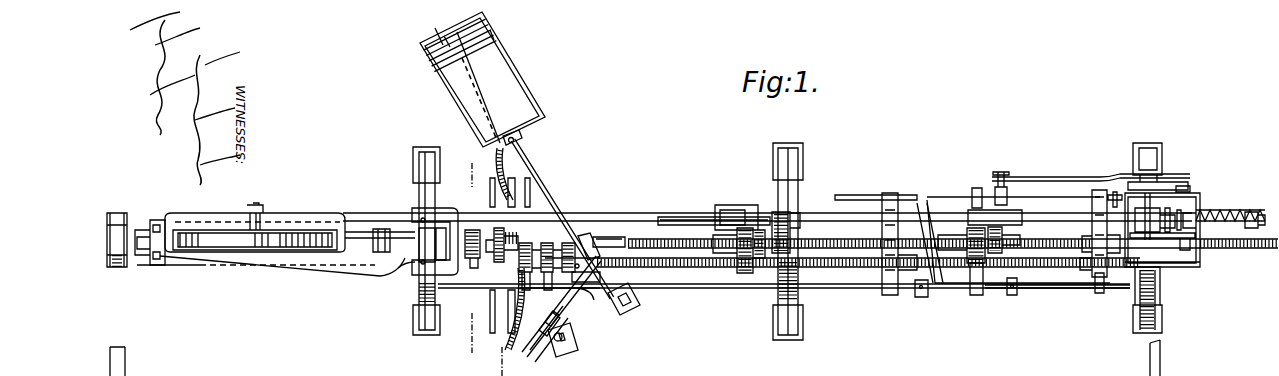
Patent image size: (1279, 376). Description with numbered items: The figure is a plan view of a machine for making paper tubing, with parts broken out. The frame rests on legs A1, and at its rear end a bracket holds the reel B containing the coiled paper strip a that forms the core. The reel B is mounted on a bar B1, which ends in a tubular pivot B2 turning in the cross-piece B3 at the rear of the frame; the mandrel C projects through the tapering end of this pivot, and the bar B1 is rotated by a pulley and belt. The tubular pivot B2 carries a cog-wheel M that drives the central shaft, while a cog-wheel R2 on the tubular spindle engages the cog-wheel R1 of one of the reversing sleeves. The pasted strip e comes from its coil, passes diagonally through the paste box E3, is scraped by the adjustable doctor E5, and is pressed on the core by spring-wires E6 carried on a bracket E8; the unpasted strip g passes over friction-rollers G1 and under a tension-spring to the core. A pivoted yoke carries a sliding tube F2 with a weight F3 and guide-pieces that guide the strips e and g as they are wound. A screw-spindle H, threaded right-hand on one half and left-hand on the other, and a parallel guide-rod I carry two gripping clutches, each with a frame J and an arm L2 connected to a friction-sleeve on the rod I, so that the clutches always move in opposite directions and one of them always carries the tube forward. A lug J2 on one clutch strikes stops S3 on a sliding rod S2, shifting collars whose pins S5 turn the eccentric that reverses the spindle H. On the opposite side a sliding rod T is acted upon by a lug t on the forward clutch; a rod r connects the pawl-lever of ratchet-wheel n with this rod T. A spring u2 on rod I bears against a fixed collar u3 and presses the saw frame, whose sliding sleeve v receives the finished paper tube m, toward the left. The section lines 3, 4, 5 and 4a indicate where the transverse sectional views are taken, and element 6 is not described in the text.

The reel B is at (255, 219).
The tubular pivot B2 is at (162, 215).
The end gear 6 is at (111, 239).
The bar B1 is at (271, 264).
The strip a is at (362, 233).
The cross-piece B3 is at (415, 266).
The legs A1 is at (418, 241).
The mandrel C is at (435, 229).
The section line 3 is at (470, 259).
The cog-wheel M is at (470, 262).
The cog-wheel R1 is at (505, 255).
The cog-wheel R2 is at (502, 241).
The tube F2 is at (559, 255).
The paper tube m is at (953, 242).
The screw-spindle H is at (868, 269).
The weight F3 is at (612, 239).
The guide-rod I is at (685, 218).
The box E3 is at (482, 79).
The section line 4 is at (433, 29).
The doctor E5 is at (524, 136).
The paper strip e is at (556, 196).
The spring-wires E6 is at (604, 279).
The bracket E8 is at (636, 306).
The friction-rollers G1 is at (553, 309).
The paper strip g is at (589, 306).
The section line 5 is at (569, 341).
The section line 4a is at (508, 361).
The arm L2 is at (780, 214).
The frame J is at (746, 272).
The sliding rod T is at (876, 237).
The stops S3 is at (919, 297).
The lug t is at (970, 191).
The block b is at (993, 190).
The rod r is at (1091, 169).
The lug J2 is at (978, 295).
The pin S5 is at (1012, 295).
The sliding rod S2 is at (1065, 288).
The ratchet-wheel n is at (1159, 238).
The sliding sleeve v is at (1162, 230).
The spring u2 is at (1230, 206).
The collar u3 is at (1256, 208).